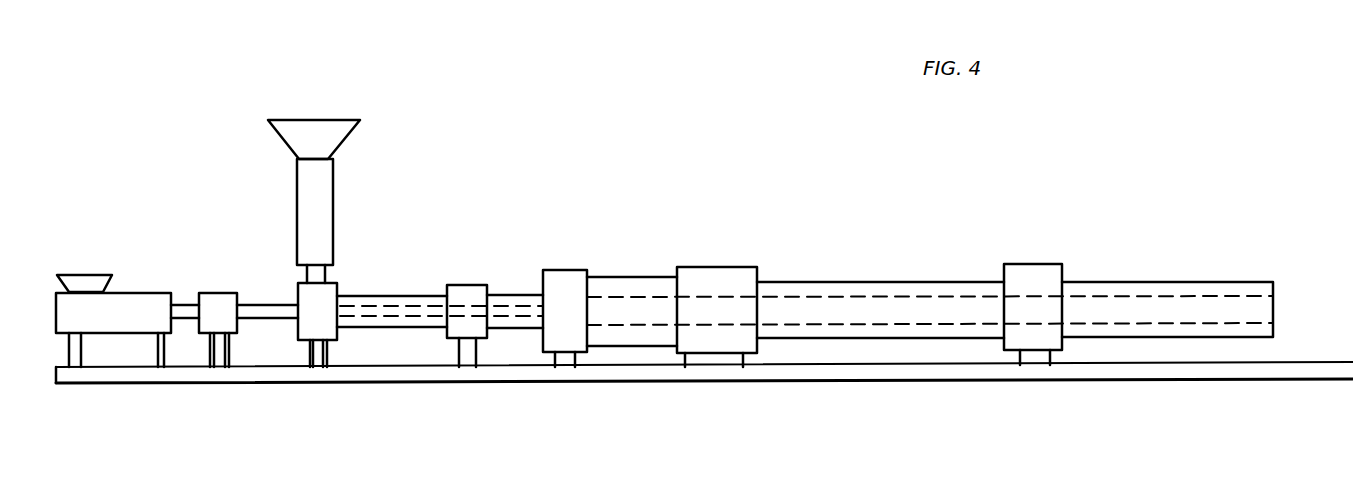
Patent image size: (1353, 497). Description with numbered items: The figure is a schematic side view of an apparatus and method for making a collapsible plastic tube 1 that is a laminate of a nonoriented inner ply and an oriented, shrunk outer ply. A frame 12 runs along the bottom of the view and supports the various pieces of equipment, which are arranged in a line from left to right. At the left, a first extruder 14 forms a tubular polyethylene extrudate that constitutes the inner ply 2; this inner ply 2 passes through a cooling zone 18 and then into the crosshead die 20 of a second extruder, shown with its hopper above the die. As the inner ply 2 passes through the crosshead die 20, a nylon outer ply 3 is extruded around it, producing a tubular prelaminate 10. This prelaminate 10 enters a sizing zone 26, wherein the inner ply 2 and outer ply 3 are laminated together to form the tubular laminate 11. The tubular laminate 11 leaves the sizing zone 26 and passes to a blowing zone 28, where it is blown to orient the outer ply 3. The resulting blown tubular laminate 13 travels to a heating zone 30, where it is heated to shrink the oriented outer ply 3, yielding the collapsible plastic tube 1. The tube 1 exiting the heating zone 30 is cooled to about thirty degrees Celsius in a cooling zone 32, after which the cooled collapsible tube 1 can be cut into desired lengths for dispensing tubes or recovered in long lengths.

The collapsible plastic tube 1 is at (773, 270).
The inner ply 2 is at (253, 310).
The outer ply 3 is at (359, 298).
The tubular laminate (prelaminate) 10 is at (345, 265).
The tubular laminate 11 is at (490, 268).
The frame 12 is at (1299, 374).
The blown tubular laminate 13 is at (607, 250).
The first extruder 14 is at (122, 310).
The cooling zone 18 is at (210, 318).
The crosshead die 20 is at (313, 325).
The sizing zone 26 is at (457, 285).
The blowing zone 28 is at (563, 275).
The heating zone 30 is at (698, 283).
The cooling zone 32 is at (1013, 278).